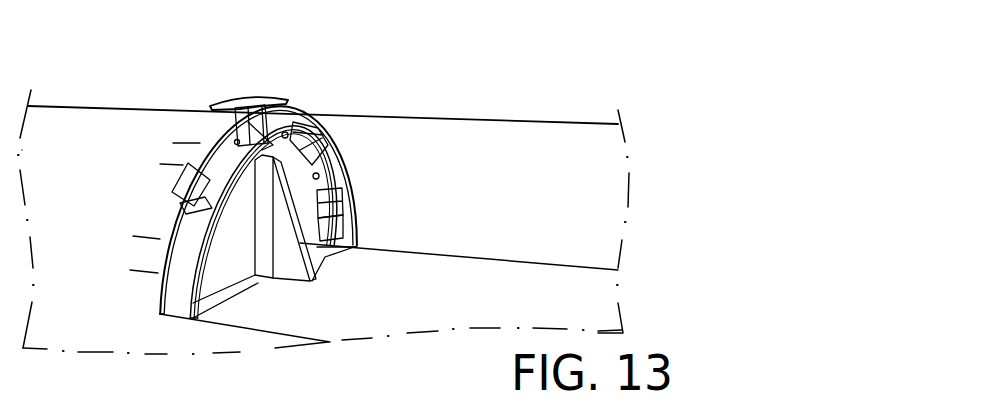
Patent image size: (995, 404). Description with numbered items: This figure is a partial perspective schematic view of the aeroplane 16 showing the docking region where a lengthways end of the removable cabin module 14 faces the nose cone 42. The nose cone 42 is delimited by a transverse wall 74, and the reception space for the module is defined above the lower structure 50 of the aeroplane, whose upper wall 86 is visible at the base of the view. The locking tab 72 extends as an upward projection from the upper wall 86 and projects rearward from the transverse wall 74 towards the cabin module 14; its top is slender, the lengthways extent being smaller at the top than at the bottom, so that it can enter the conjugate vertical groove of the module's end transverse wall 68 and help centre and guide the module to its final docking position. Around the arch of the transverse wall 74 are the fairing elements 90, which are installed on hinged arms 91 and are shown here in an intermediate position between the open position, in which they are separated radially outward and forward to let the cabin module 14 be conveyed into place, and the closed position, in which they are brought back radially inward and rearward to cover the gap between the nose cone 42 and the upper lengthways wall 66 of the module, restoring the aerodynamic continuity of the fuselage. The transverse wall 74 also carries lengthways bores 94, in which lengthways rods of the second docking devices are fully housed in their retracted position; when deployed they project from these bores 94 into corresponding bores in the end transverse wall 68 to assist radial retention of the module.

The removable cabin module 14 is at (524, 114).
The aeroplane 16 is at (90, 106).
The nose cone 42 is at (58, 121).
The lower structure 50 is at (238, 338).
The upper lengthways wall 66 is at (452, 127).
The end transverse wall 68 is at (186, 292).
The locking tab 72 is at (313, 268).
The transverse wall 74 is at (222, 268).
The upper wall 86 is at (385, 318).
The fairing elements 90 is at (235, 100).
The hinged arms 91 is at (263, 106).
The lengthways bores 94 is at (318, 173).